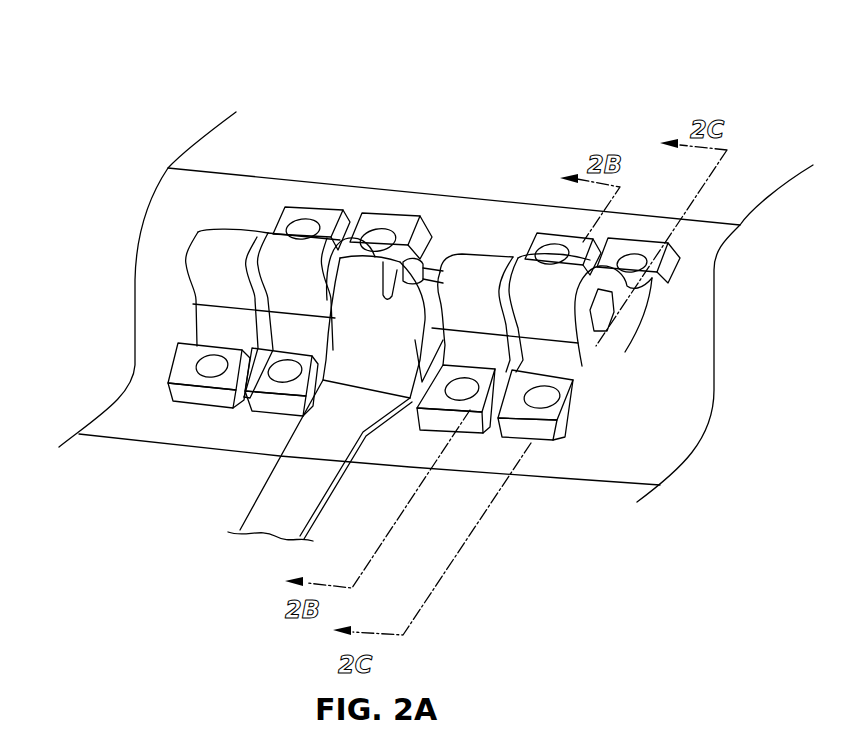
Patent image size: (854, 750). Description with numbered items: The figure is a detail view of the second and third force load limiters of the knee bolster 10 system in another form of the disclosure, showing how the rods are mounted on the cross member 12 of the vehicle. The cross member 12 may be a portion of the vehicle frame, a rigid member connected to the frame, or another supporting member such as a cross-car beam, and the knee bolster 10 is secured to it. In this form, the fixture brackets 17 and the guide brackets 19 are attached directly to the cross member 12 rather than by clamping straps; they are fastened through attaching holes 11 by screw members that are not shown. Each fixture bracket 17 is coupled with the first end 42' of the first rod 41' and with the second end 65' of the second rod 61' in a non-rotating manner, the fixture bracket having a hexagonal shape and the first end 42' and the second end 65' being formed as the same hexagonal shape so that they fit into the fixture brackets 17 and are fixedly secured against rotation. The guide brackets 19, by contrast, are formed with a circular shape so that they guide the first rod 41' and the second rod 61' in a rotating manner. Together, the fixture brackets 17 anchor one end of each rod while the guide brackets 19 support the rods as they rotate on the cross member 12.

The knee bolster 10 is at (138, 41).
The attaching holes 11 is at (570, 407).
The cross member 12 is at (518, 217).
The fixture brackets 17 is at (205, 395).
The guide brackets 19 is at (280, 407).
The first rod 41' is at (353, 210).
The first end of first rod 42' is at (198, 302).
The second rod 61' is at (341, 334).
The second end of second rod 65' is at (682, 316).